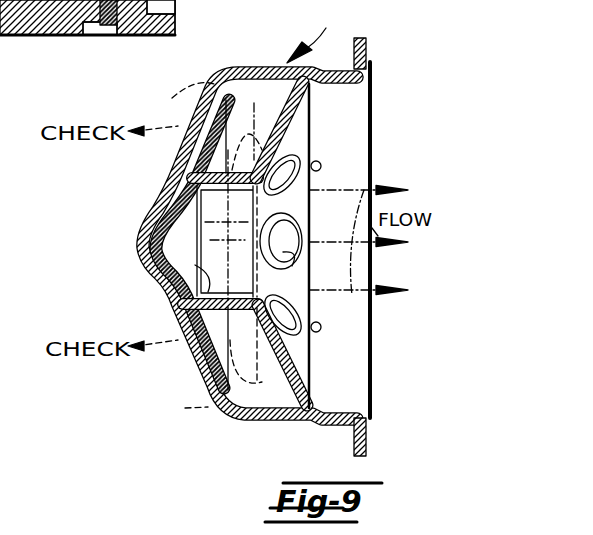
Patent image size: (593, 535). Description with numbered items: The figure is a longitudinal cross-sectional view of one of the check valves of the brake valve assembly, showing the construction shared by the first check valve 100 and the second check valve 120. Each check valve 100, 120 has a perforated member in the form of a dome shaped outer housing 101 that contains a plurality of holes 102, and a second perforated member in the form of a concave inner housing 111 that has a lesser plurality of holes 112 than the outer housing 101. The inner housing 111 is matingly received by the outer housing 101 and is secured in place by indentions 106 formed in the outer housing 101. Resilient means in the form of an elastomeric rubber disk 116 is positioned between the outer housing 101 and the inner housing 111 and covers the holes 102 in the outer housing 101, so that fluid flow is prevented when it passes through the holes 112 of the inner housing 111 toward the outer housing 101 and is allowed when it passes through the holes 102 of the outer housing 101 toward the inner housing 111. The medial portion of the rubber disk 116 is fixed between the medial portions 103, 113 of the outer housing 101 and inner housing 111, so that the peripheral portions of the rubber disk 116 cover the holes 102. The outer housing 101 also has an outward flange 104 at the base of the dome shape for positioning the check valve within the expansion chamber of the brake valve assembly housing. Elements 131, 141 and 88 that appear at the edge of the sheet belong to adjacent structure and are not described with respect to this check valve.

The first check valve 100 is at (307, 33).
The second check valve 120 is at (307, 33).
The outer housing 101 is at (256, 67).
The holes 102 is at (183, 148).
The medial portion of the outer housing 103 is at (140, 240).
The outward flange 104 is at (393, 33).
The indentions 106 is at (316, 68).
The inner housing 111 is at (309, 133).
The holes 112 is at (290, 168).
The medial portion of the inner housing 113 is at (172, 294).
The elastomeric rubber disk 116 is at (200, 250).
The seal 131 is at (93, 37).
The housing block 141 is at (87, 17).
The member 88 is at (183, 0).